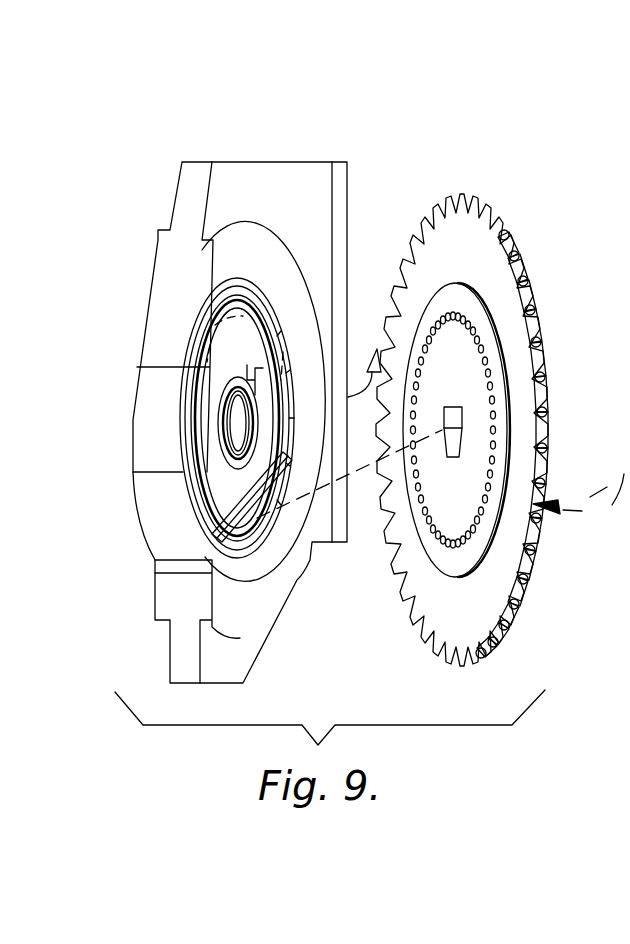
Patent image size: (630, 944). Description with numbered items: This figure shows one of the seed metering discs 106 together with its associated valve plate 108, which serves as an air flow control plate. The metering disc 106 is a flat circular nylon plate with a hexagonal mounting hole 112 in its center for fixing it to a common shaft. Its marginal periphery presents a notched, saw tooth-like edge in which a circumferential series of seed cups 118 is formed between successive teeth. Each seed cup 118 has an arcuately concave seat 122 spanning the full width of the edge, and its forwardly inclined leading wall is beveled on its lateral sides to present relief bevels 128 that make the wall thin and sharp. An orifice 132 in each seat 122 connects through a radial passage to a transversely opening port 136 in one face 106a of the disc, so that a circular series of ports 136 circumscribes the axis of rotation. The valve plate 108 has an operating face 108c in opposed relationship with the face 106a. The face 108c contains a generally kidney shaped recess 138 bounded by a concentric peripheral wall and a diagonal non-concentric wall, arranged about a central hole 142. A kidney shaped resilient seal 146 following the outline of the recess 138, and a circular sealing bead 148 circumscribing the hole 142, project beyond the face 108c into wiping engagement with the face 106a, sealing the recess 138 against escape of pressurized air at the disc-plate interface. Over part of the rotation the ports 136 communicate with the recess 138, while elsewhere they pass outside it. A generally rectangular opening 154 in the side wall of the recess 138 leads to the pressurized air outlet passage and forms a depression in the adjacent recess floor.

The valve plate 108 is at (264, 132).
The operating face 108c is at (252, 253).
The resilient seal 146 is at (268, 297).
The kidney shaped recess 138 is at (258, 317).
The opening 154 is at (258, 396).
The central hole 142 is at (238, 416).
The circular sealing bead 148 is at (228, 432).
The metering disc 106 is at (513, 184).
The disc face 106a is at (440, 302).
The relief bevel 128 is at (453, 430).
The port 136 is at (478, 331).
The arcuately concave seat 122 is at (470, 355).
The hexagonal mounting hole 112 is at (458, 428).
The seed cup 118 is at (558, 308).
The orifice 132 is at (546, 460).